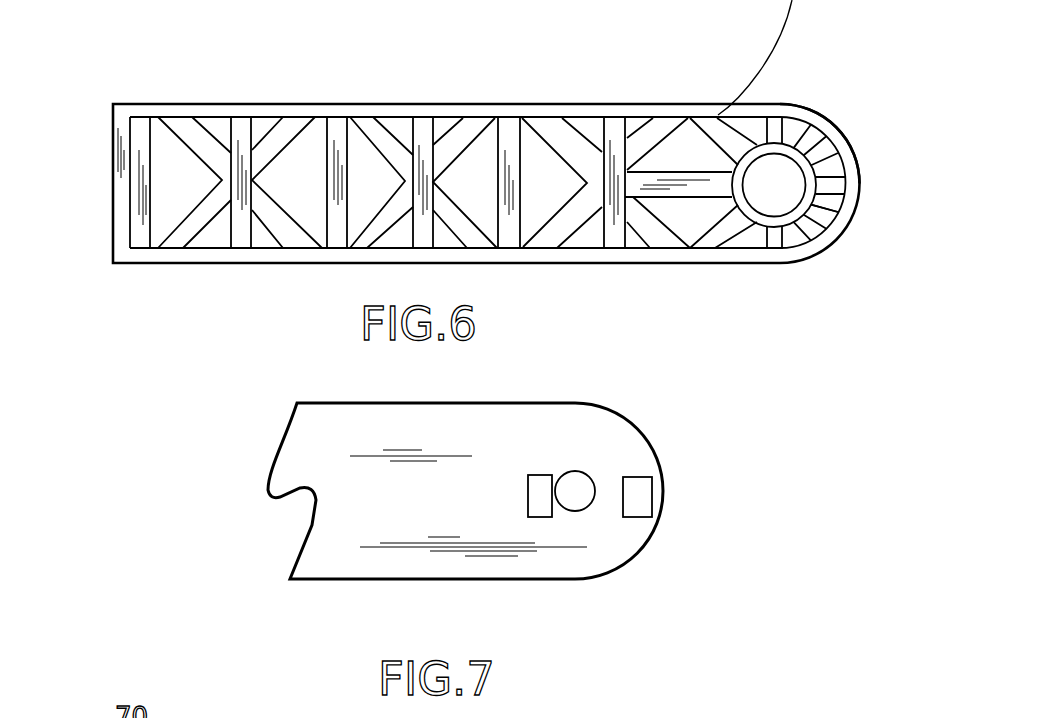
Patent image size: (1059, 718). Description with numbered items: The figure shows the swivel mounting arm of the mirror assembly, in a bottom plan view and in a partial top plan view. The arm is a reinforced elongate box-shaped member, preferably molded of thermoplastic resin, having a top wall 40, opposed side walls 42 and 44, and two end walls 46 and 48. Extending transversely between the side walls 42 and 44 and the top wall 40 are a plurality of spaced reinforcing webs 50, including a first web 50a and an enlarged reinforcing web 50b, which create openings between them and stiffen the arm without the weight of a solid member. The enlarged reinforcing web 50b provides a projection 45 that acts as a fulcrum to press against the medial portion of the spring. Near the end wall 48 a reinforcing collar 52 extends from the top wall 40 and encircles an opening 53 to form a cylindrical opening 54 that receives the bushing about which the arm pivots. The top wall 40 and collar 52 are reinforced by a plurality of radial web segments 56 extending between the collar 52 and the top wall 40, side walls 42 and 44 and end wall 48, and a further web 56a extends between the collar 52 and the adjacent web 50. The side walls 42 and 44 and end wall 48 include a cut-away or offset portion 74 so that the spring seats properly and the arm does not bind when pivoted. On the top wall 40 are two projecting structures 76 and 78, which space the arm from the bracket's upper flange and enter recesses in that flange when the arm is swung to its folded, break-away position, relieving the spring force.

In FIG. 6, the top wall 40 is at (585, 236).
In FIG. 7, the top wall 40 is at (513, 433).
In FIG. 6, the side wall 42 is at (665, 112).
In FIG. 6, the side wall 44 is at (632, 258).
In FIG. 6, the projection 45 is at (613, 236).
In FIG. 6, the end wall 46 is at (120, 193).
In FIG. 6, the end wall 48 is at (848, 186).
In FIG. 6, the reinforcing webs 50 is at (335, 128).
In FIG. 6, the first cross member 50a is at (123, 244).
In FIG. 6, the enlarged reinforcing web 50b is at (520, 162).
In FIG. 6, the reinforcing collar 52 is at (820, 124).
In FIG. 6, the opening 53 is at (800, 180).
In FIG. 7, the opening 53 is at (570, 473).
In FIG. 6, the cylindrical opening 54 is at (836, 226).
In FIG. 6, the radial web segments 56 is at (750, 120).
In FIG. 6, the web 56a is at (690, 188).
In FIG. 6, the cut-away or offset portion 74 is at (779, 235).
In FIG. 7, the projecting structure 76 is at (540, 497).
In FIG. 7, the projecting structure 78 is at (640, 497).